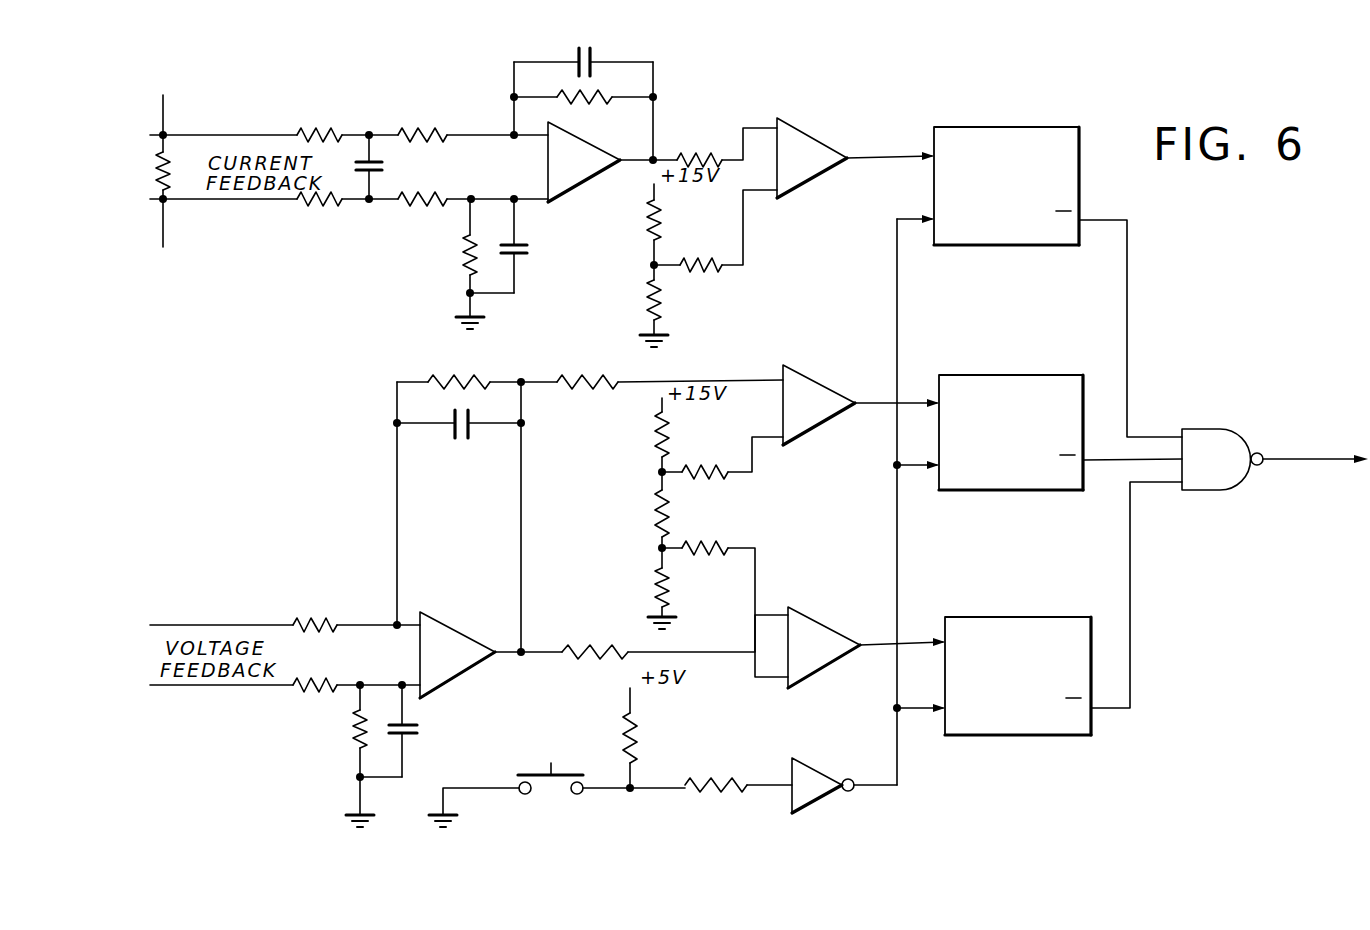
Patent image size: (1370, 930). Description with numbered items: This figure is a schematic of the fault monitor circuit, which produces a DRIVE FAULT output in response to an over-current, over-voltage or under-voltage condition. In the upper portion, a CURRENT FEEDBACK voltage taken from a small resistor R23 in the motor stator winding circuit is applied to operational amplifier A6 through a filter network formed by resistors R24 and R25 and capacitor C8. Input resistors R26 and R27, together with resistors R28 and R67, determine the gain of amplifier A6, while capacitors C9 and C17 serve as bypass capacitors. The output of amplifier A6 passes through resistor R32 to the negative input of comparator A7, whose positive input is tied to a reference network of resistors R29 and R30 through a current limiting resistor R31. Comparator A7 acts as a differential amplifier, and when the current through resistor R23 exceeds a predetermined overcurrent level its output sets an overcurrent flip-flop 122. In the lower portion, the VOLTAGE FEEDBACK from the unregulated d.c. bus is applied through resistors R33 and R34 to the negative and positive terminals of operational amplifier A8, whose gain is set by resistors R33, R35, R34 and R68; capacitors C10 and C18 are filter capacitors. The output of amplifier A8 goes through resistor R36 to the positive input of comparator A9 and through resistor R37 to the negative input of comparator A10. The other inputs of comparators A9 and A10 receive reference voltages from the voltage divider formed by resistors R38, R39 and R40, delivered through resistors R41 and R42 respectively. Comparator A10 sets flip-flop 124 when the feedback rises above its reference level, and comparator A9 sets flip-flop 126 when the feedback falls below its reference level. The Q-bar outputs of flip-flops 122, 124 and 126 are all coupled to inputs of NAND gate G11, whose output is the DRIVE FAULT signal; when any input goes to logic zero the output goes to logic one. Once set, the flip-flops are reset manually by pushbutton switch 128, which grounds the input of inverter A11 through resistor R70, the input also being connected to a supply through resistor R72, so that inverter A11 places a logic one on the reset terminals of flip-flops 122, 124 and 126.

The resistor R23 is at (170, 162).
The resistor R24 is at (319, 122).
The resistor R25 is at (317, 212).
The input resistor R26 is at (422, 212).
The input resistor R27 is at (422, 122).
The resistor R28 is at (583, 109).
The capacitor C8 is at (388, 167).
The bypass capacitor C9 is at (598, 68).
The bypass capacitor C17 is at (522, 246).
The resistor R67 is at (452, 250).
The operational amplifier A6 is at (584, 162).
The resistor R32 is at (700, 147).
The comparator A7 is at (812, 158).
The resistor R29 is at (683, 220).
The resistor R30 is at (631, 313).
The current limiting resistor R31 is at (688, 277).
The overcurrent flip-flop 122 is at (1033, 127).
The flip-flop 124 is at (1018, 375).
The flip-flop 126 is at (1027, 617).
The NAND gate G11 is at (1275, 468).
The resistor R35 is at (459, 368).
The resistor R37 is at (587, 368).
The filter capacitor C10 is at (459, 437).
The voltage divider resistor R38 is at (625, 434).
The voltage divider resistor R39 is at (625, 513).
The voltage divider resistor R40 is at (629, 598).
The resistor R41 is at (718, 543).
The resistor R42 is at (712, 478).
The comparator A10 is at (819, 405).
The comparator A9 is at (824, 647).
The operational amplifier A8 is at (457, 655).
The resistor R33 is at (315, 612).
The resistor R34 is at (312, 699).
The resistor R36 is at (597, 660).
The filter capacitor C18 is at (418, 731).
The resistor R68 is at (350, 726).
The pushbutton switch 128 is at (518, 780).
The resistor R72 is at (638, 735).
The resistor R70 is at (708, 770).
The inverter A11 is at (826, 766).